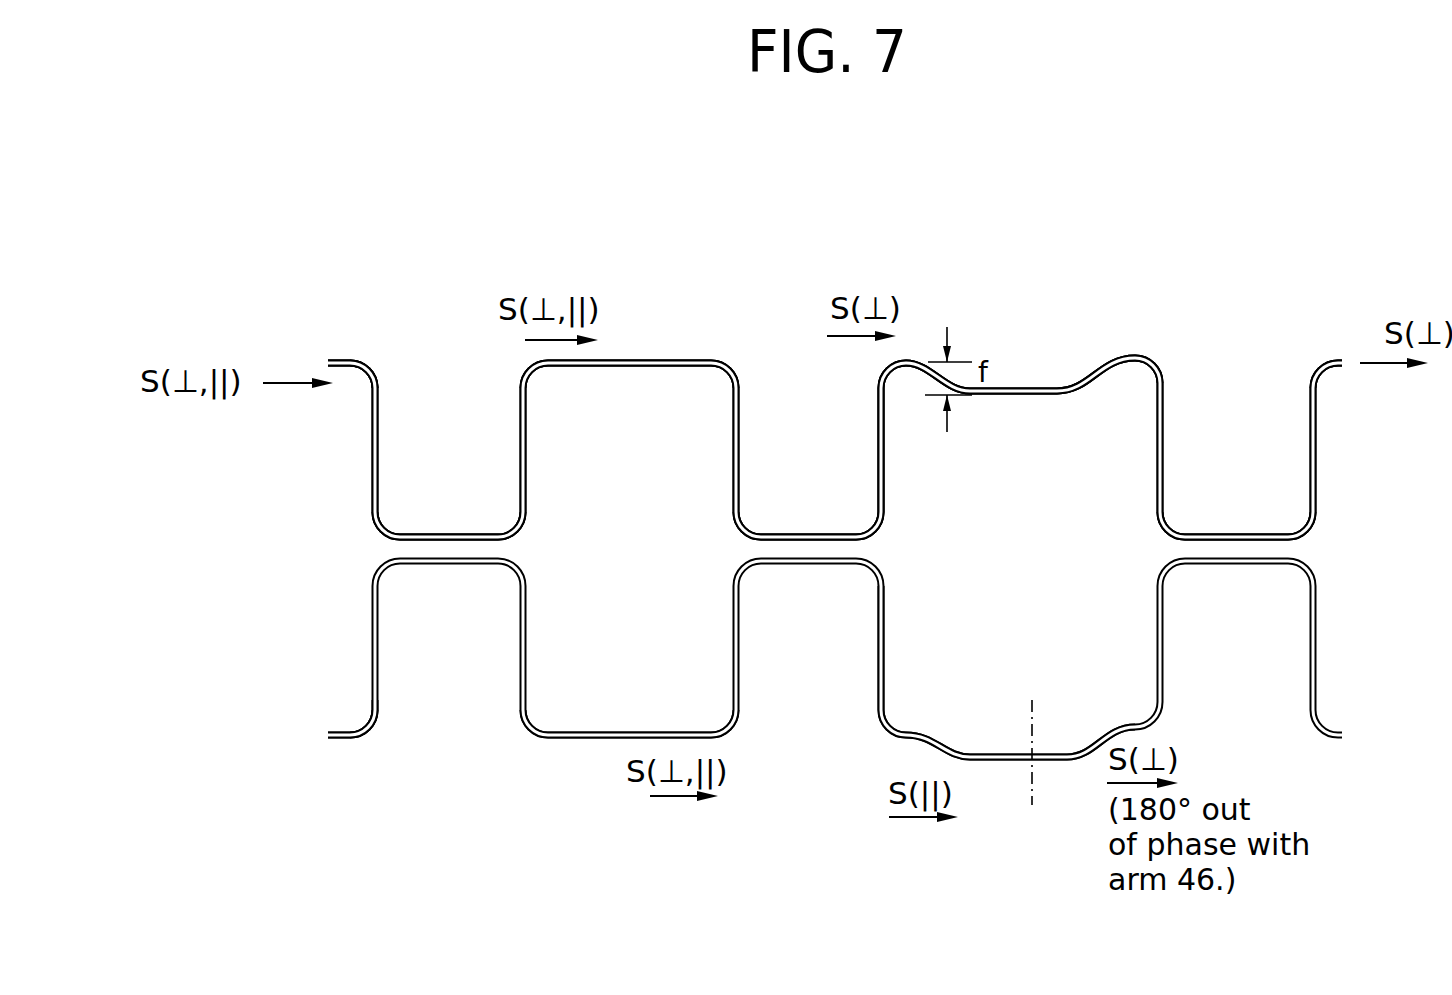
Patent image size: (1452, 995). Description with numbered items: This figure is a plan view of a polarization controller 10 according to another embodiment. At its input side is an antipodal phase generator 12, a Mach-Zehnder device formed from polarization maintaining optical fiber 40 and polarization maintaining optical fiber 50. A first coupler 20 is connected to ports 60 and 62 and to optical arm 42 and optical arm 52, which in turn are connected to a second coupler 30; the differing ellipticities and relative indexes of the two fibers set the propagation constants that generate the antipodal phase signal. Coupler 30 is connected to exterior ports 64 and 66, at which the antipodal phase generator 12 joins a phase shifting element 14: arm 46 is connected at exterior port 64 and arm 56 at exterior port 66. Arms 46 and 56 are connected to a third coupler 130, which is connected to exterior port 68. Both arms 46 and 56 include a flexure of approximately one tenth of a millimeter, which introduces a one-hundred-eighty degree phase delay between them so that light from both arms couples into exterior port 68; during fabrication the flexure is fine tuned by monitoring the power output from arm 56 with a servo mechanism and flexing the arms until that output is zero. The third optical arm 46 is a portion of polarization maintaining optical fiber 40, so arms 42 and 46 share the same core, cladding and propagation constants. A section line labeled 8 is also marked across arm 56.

The polarization controller 10 is at (1252, 198).
The antipodal phase generator 12 is at (722, 287).
The phase shifting element 14 is at (1112, 282).
The coupler 20 is at (444, 533).
The coupler 30 is at (805, 534).
The polarization maintaining optical fiber 40 is at (363, 357).
The optical arm 42 is at (663, 358).
The optical arm 46 is at (1070, 385).
The polarization maintaining optical fiber 50 is at (370, 730).
The optical arm 52 is at (585, 740).
The optical arm 56 is at (882, 728).
The port 60 is at (328, 358).
The port 62 is at (312, 738).
The exterior port 64 is at (878, 428).
The exterior port 66 is at (878, 588).
The exterior port 68 is at (1340, 355).
The third coupler 130 is at (1232, 532).
The section line 8- 8 is at (1033, 751).